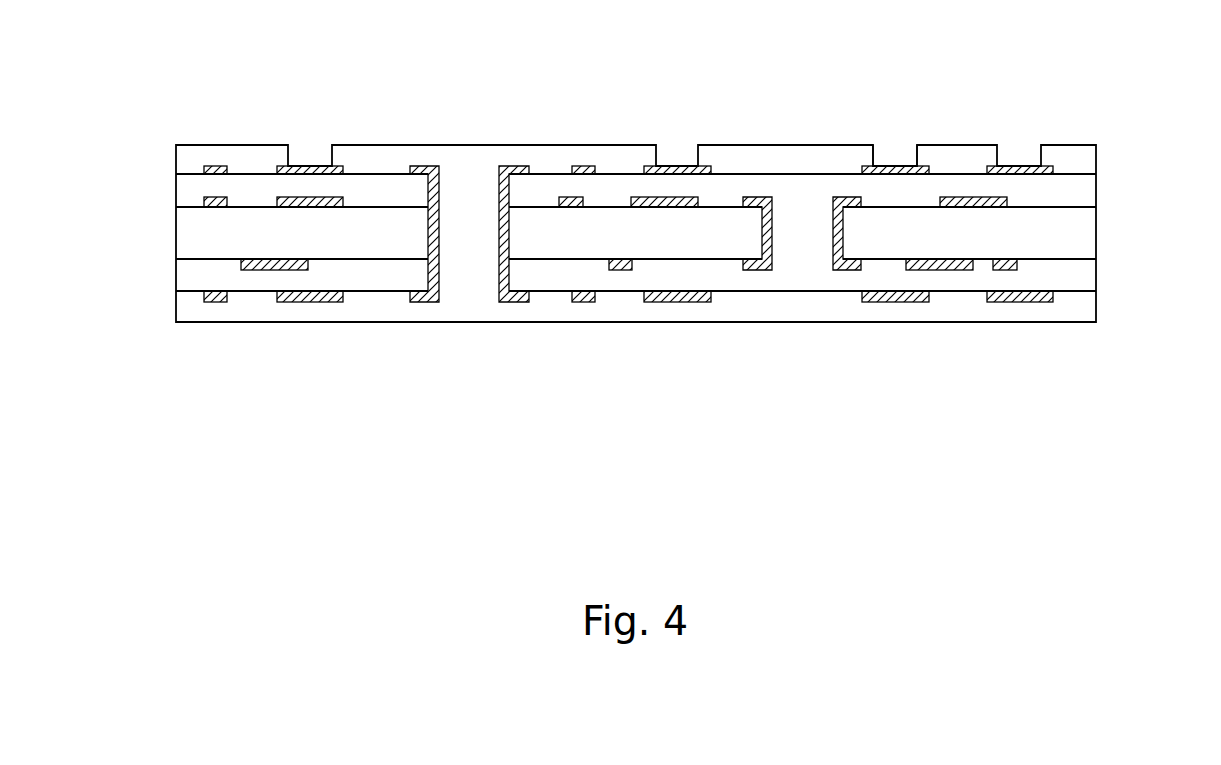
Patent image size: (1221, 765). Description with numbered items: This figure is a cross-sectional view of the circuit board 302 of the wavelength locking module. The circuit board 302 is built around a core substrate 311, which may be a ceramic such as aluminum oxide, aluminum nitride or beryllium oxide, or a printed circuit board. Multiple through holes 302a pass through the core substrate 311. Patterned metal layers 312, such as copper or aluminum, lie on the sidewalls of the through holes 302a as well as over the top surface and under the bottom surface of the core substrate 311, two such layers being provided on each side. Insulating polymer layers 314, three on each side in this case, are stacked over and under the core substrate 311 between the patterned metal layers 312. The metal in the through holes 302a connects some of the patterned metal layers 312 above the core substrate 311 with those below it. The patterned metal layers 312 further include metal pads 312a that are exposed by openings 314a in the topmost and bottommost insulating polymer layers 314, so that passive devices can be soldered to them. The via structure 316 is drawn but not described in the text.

The circuit board 302 is at (162, 145).
The through hole 302a is at (474, 303).
The core substrate 311 is at (1080, 233).
The patterned metal layer 312 is at (563, 200).
The metal pad 312a is at (1020, 165).
The insulating polymer layer 314 is at (195, 153).
The opening 314a is at (907, 151).
The conductive via 316 is at (435, 167).